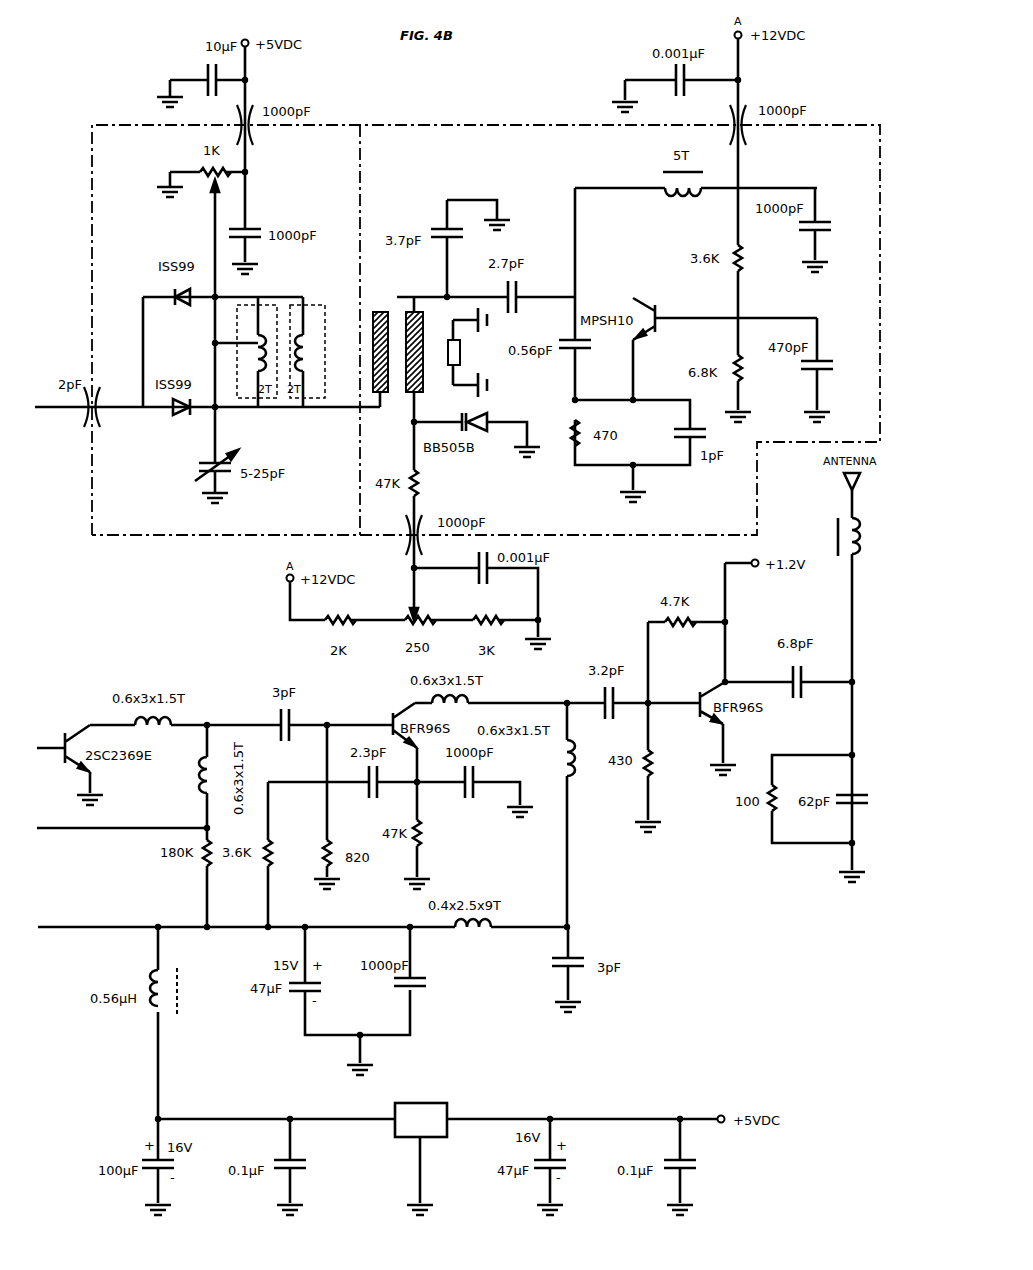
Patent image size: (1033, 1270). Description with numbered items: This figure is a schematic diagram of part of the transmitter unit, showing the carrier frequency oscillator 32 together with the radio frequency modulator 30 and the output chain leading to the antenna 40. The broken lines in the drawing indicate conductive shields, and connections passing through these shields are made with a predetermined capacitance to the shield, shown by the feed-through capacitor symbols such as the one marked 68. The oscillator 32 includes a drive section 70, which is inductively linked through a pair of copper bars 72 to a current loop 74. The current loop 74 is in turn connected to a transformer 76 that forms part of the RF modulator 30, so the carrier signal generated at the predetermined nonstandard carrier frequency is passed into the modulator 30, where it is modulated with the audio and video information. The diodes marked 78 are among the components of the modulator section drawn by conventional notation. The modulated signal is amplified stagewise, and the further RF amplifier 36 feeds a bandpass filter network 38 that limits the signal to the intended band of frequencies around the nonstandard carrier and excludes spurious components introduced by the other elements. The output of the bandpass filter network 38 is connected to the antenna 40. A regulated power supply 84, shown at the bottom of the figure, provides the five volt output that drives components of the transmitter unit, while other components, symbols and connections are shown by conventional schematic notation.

The radio frequency modulator 30 is at (164, 62).
The feed-through capacitor 68 is at (252, 106).
The drive section 70 is at (584, 158).
The copper bars 72 is at (400, 295).
The current loop 74 is at (335, 297).
The transformer 76 is at (279, 398).
The diodes 78 is at (175, 292).
The carrier frequency oscillator 32 is at (845, 350).
The RF amplifier 36 is at (705, 825).
The bandpass filter network 38 is at (868, 594).
The antenna 40 is at (838, 481).
The regulated power supply 84 is at (433, 1103).